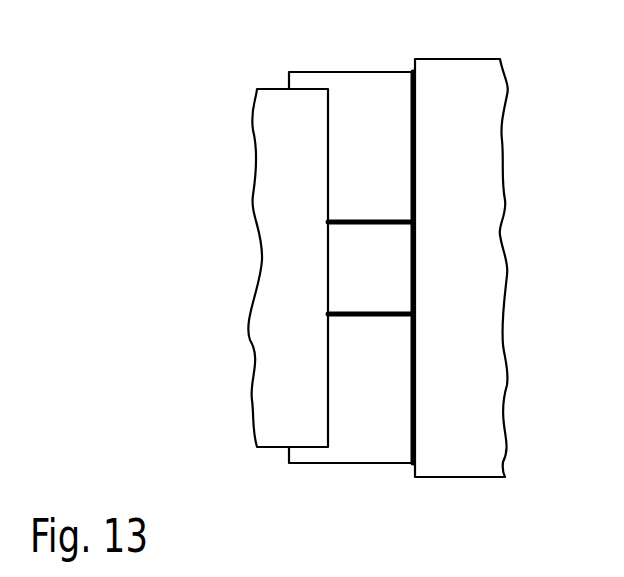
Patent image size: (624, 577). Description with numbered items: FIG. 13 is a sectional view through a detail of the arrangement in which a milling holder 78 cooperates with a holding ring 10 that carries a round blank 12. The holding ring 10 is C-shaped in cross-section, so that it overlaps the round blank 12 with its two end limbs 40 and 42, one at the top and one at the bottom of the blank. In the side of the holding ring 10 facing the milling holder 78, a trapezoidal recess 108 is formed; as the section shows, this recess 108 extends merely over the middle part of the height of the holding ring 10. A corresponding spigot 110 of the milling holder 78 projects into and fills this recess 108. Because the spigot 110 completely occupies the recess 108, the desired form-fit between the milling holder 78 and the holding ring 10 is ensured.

The holding ring 10 is at (359, 162).
The round blank 12 is at (279, 251).
The end limb 40 is at (305, 80).
The end limb 42 is at (305, 457).
The milling holder 78 is at (483, 165).
The recess 108 is at (377, 257).
The spigot 110 is at (372, 290).